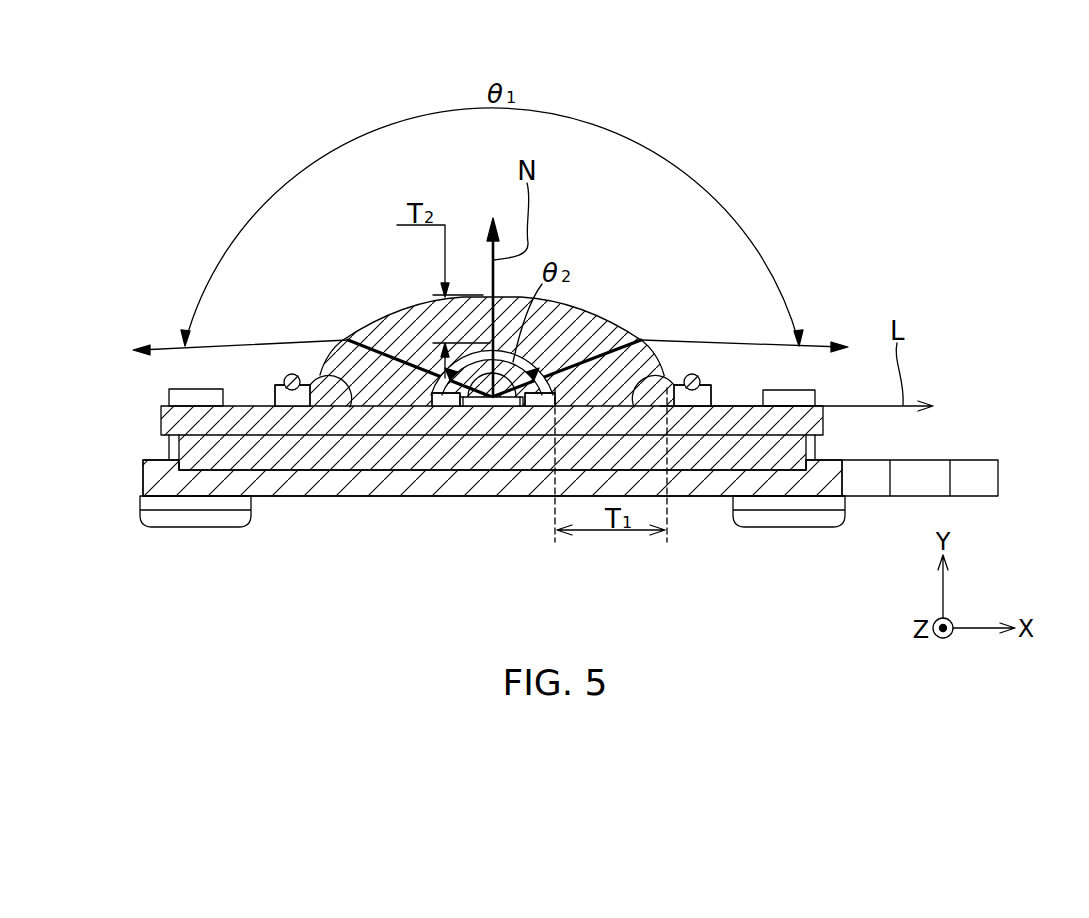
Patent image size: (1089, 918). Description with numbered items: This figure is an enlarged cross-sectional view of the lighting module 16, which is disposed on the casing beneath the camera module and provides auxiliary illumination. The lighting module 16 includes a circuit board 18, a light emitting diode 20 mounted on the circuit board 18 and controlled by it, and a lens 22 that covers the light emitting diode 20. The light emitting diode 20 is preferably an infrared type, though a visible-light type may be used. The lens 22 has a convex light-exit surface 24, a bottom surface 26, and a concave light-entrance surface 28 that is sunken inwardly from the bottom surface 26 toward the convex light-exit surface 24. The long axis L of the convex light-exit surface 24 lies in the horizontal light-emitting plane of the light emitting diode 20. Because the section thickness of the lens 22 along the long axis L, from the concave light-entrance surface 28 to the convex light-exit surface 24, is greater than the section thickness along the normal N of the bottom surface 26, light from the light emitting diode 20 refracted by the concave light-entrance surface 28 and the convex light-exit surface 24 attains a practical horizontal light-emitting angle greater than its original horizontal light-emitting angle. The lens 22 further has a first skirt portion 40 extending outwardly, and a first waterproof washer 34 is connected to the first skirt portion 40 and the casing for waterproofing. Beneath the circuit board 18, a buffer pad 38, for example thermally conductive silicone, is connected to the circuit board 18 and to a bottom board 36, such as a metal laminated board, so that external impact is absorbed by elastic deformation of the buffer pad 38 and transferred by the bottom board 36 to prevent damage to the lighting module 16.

The lighting module 16 is at (807, 168).
The circuit board 18 is at (421, 418).
The light emitting diode 20 is at (474, 404).
The lens 22 is at (417, 328).
The convex light-exit surface 24 is at (595, 308).
The bottom surface 26 is at (317, 366).
The concave light-entrance surface 28 is at (665, 367).
The first waterproof washer 34 is at (313, 377).
The bottom board 36 is at (815, 482).
The buffer pad 38 is at (755, 447).
The first skirt portion 40 is at (290, 398).